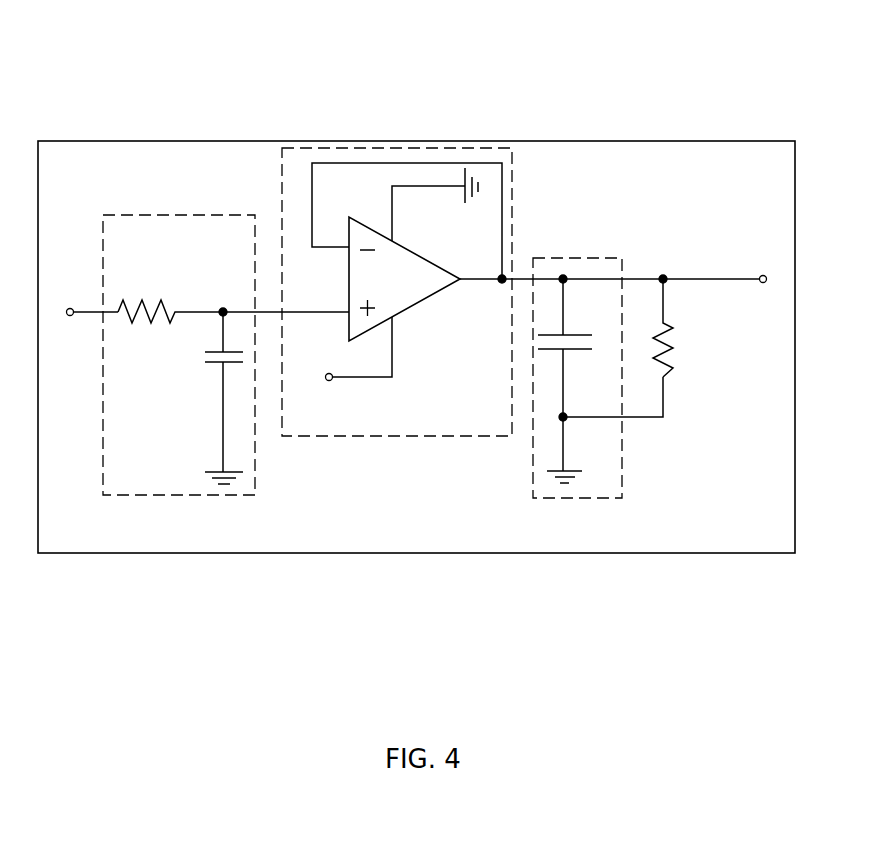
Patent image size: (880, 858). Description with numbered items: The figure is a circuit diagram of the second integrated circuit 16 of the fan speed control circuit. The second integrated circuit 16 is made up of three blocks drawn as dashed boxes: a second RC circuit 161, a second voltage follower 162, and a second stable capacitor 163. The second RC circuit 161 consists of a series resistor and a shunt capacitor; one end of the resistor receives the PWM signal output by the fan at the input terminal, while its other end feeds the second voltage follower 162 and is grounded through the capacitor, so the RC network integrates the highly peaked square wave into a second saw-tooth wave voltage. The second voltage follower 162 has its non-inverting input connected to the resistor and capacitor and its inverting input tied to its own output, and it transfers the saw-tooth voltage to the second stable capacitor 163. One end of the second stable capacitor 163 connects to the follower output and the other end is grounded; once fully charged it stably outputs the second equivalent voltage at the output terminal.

The second integrated circuit 16 is at (695, 141).
The second RC circuit 161 is at (170, 214).
The second voltage follower 162 is at (330, 148).
The second stable capacitor 163 is at (572, 258).